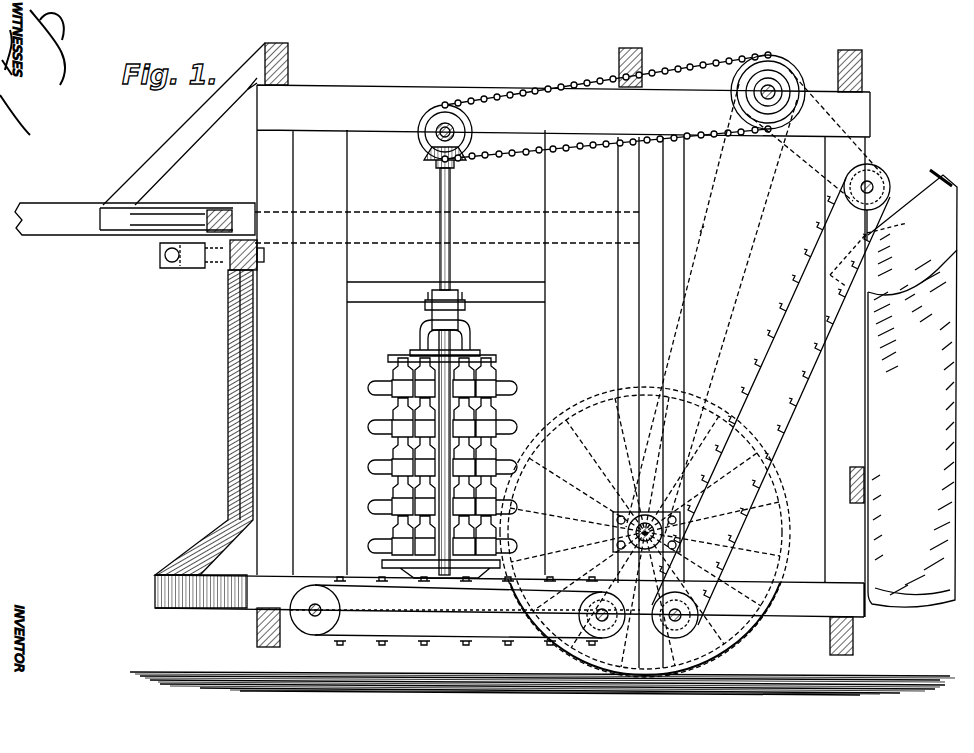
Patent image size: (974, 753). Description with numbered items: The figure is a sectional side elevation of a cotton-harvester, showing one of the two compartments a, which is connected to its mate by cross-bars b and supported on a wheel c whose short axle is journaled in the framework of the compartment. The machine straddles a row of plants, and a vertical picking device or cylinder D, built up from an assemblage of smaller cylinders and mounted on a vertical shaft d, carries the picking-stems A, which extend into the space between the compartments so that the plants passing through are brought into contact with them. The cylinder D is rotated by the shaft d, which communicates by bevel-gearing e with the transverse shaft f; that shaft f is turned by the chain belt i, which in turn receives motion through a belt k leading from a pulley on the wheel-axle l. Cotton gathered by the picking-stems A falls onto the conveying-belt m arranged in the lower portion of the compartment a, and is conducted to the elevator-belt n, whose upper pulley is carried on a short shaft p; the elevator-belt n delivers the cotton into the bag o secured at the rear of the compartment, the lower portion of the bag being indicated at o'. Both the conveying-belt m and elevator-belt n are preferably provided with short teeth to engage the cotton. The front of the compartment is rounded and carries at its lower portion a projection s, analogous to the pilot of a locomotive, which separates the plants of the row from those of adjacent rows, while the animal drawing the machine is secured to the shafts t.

The compartment a is at (512, 376).
The cross-bars b is at (567, 349).
The wheels c is at (645, 532).
The vertical shaft d is at (447, 205).
The bevel-gearing e is at (454, 136).
The transverse shaft f is at (445, 124).
The drive sprocket g is at (753, 296).
The chain belt i is at (606, 107).
The belt k is at (707, 224).
The wheel-axle l is at (646, 516).
The conveying-belt m is at (494, 609).
The elevator-belt n is at (779, 401).
The bag o is at (903, 388).
The bag bottom o' is at (912, 578).
The short shaft p is at (866, 202).
The projection s is at (204, 439).
The shafts t is at (140, 156).
The picking-stems A is at (442, 454).
The cylinder D is at (442, 341).